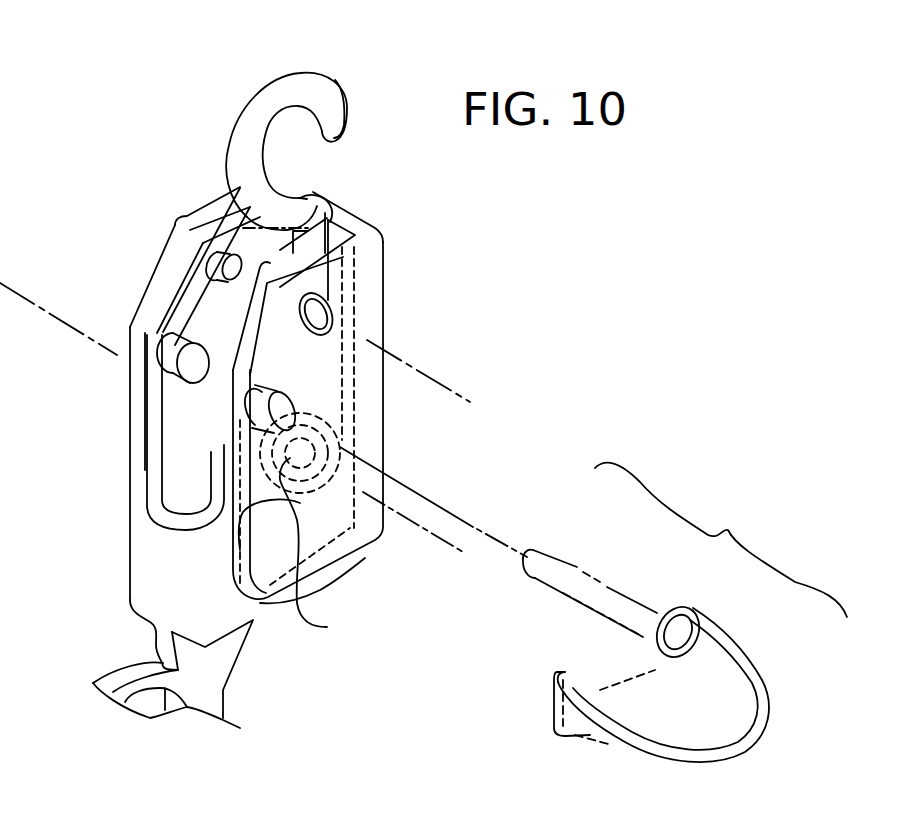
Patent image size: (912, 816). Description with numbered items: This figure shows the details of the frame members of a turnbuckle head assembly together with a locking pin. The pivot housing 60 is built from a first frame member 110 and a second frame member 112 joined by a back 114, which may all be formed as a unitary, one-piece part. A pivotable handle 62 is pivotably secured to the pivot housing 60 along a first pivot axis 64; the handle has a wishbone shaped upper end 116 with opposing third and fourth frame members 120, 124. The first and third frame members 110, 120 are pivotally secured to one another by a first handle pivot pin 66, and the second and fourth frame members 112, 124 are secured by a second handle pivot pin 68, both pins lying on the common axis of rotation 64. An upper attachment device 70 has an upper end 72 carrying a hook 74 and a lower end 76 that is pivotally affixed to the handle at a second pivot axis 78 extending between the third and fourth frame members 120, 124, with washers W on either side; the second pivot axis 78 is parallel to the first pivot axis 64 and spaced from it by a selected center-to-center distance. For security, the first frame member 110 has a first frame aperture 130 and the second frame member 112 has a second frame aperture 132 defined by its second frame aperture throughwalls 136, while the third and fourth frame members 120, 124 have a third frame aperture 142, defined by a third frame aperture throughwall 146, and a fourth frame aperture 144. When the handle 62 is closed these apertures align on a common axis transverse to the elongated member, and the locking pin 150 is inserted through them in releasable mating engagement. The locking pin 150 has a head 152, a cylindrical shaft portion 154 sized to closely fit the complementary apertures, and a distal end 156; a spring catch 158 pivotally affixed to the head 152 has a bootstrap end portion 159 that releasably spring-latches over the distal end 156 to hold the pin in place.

The pivot housing 60 is at (385, 320).
The pivotable handle 62 is at (215, 692).
The first pivot axis 64 is at (448, 388).
The first handle pivot pin 66 is at (335, 300).
The second handle pivot pin 68 is at (218, 203).
The upper attachment device 70 is at (307, 212).
The upper end 72 is at (320, 72).
The hook 74 is at (277, 132).
The lower end 76 is at (233, 552).
The second pivot axis 78 is at (447, 538).
The first frame member 110 is at (245, 582).
The second frame member 112 is at (138, 431).
The back 114 is at (350, 218).
The wishbone shaped upper end 116 is at (150, 537).
The third frame member 120 is at (220, 453).
The fourth frame member 124 is at (168, 260).
The first frame aperture 130 is at (353, 443).
The second frame aperture 132 is at (138, 322).
The second frame aperture throughwalls 136 is at (135, 355).
The third frame aperture 142 is at (340, 408).
The fourth frame aperture 144 is at (165, 293).
The third frame aperture throughwall 146 is at (305, 380).
The locking pin 150 is at (721, 540).
The head 152 is at (662, 648).
The shaft portion 154 is at (623, 592).
The distal end 156 is at (530, 548).
The spring catch 158 is at (753, 715).
The bootstrap end portion 159 is at (557, 703).
The washers W is at (316, 551).